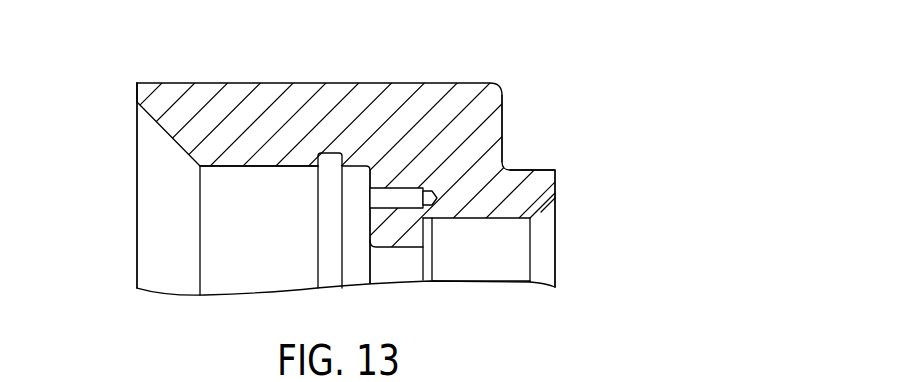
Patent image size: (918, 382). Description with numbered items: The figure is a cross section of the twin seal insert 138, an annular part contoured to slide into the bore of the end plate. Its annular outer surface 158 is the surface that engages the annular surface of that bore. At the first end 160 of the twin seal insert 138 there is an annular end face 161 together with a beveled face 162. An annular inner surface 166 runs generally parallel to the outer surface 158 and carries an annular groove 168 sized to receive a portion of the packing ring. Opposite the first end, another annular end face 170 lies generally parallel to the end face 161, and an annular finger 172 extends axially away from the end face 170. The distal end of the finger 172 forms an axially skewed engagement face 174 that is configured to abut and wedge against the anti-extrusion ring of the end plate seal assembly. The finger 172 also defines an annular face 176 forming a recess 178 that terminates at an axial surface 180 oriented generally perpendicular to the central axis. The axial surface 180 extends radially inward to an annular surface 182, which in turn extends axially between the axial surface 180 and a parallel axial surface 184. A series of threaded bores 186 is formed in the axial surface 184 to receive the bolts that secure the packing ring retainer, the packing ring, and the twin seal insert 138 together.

The twin seal insert 138 is at (535, 72).
The annular outer surface 158 is at (275, 83).
The first end 160 is at (128, 146).
The annular end face 161 is at (137, 97).
The beveled face 162 is at (170, 136).
The annular inner surface 166 is at (233, 168).
The annular groove 168 is at (330, 153).
The annular end face 170 is at (503, 125).
The annular finger 172 is at (557, 173).
The axially skewed engagement face 174 is at (541, 211).
The annular face 176 is at (488, 219).
The recess 178 is at (453, 260).
The axial surface 180 is at (432, 230).
The annular surface 182 is at (385, 248).
The axial surface 184 is at (371, 218).
The threaded bores 186 is at (397, 188).